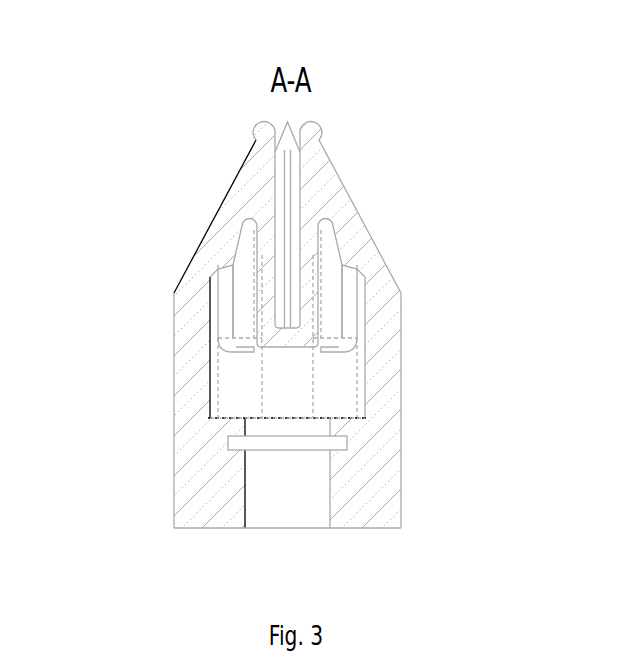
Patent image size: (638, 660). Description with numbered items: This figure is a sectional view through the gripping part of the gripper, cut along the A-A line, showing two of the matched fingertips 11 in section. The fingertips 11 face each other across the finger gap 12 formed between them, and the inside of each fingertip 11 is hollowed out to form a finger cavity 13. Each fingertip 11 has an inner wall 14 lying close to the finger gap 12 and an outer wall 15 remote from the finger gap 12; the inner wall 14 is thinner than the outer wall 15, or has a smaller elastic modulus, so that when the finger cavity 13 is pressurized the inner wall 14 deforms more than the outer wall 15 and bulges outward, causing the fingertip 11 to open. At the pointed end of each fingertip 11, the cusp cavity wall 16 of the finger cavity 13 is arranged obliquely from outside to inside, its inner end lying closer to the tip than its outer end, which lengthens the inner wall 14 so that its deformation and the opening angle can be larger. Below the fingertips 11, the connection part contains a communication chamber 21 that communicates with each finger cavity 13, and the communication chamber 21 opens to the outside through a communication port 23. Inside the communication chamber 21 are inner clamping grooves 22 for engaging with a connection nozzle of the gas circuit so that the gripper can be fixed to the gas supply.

The fingertips 11 is at (257, 148).
The finger gap 12 is at (288, 152).
The finger cavity 13 is at (243, 272).
The inner wall 14 is at (260, 262).
The outer wall 15 is at (218, 227).
The cusp cavity wall 16 is at (247, 230).
The communication chamber 21 is at (282, 406).
The inner clamping groove 22 is at (232, 446).
The communication port 23 is at (263, 528).